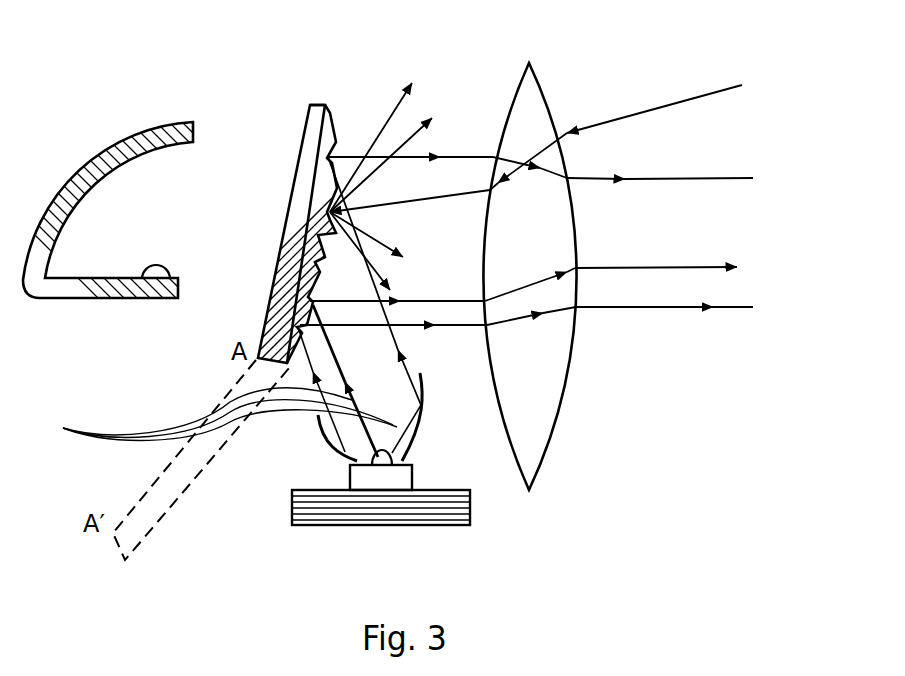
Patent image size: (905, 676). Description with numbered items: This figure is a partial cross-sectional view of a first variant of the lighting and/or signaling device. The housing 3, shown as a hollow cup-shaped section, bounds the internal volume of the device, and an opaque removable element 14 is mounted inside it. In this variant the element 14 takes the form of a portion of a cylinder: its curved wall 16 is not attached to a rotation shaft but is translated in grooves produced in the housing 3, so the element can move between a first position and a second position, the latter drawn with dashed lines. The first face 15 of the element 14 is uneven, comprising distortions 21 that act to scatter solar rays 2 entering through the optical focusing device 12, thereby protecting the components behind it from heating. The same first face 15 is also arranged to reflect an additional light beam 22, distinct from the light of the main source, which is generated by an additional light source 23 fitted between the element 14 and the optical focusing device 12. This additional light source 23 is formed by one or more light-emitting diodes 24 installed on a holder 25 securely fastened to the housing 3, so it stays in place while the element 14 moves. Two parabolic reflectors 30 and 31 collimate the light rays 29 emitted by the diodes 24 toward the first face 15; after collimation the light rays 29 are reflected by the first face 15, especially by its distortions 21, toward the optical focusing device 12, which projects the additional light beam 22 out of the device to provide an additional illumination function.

The solar rays 2 is at (643, 115).
The housing 3 is at (341, 507).
The optical focusing device 12 is at (548, 356).
The opaque removable element 14 is at (290, 219).
The first face 15 is at (336, 114).
The curved wall 16 is at (317, 105).
The distortions 21 is at (342, 148).
The additional light beam 22 is at (753, 170).
The additional light source 23 is at (432, 430).
The light-emitting diodes 24 is at (372, 460).
The holder 25 is at (395, 475).
The light rays 29 is at (217, 415).
The parabolic reflector 30 is at (330, 443).
The parabolic reflector 31 is at (418, 442).